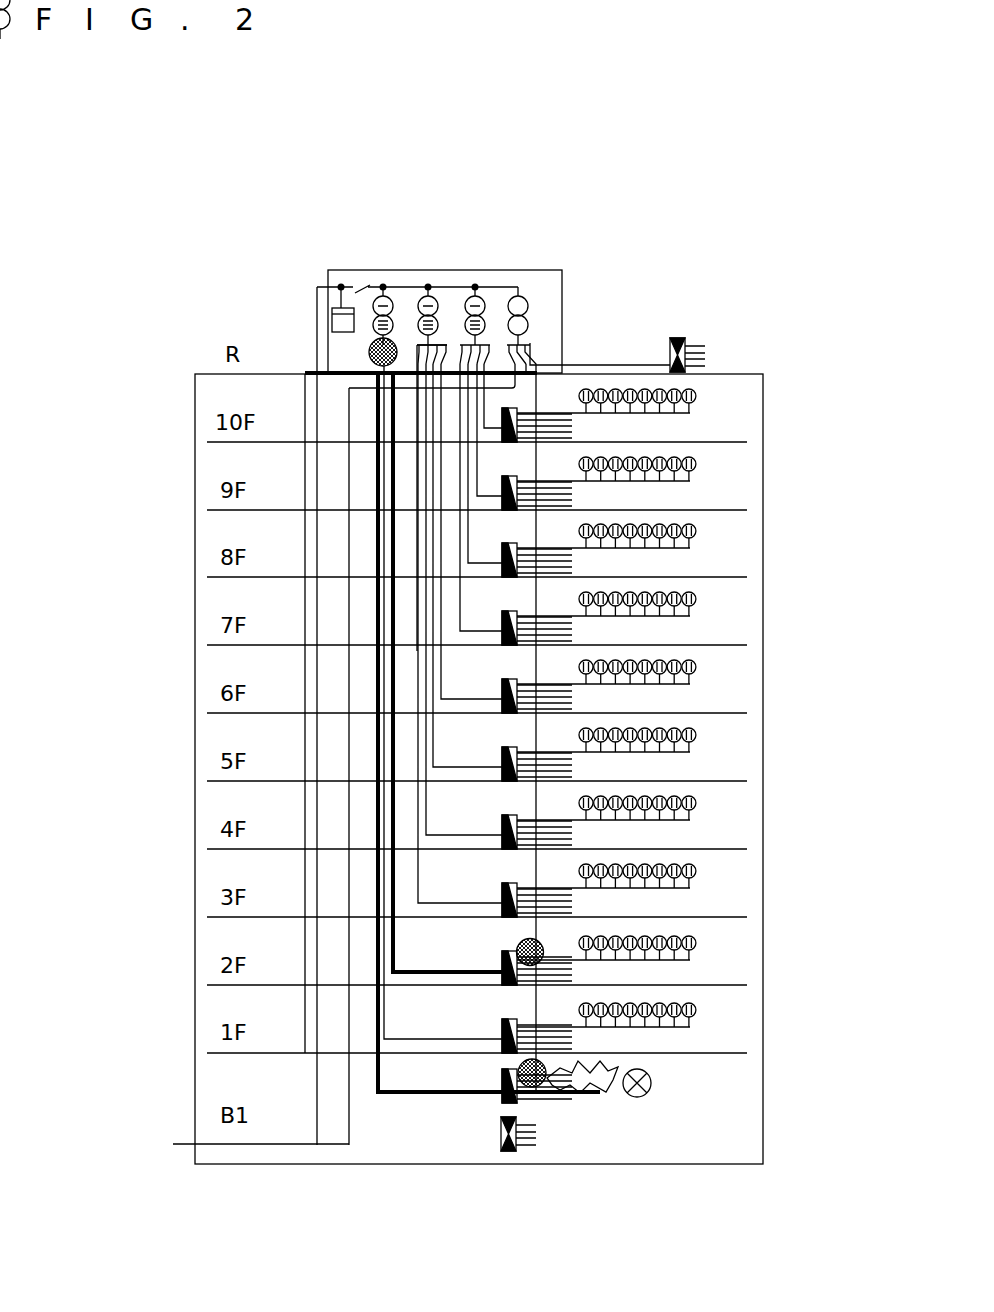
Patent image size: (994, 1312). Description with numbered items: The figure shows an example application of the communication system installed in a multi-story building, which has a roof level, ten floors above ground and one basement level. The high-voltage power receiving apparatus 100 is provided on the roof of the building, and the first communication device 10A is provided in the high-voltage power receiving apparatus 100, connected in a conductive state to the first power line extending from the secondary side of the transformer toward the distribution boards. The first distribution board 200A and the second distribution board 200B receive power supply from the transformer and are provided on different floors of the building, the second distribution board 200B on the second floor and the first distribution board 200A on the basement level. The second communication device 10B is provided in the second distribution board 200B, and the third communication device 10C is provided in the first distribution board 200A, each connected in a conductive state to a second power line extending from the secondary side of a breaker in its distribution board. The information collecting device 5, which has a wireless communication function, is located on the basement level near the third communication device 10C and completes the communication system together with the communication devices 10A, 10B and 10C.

The high-voltage power receiving apparatus 100 is at (440, 270).
The first communication device 10A is at (369, 354).
The second communication device 10B is at (544, 946).
The third communication device 10C is at (546, 1068).
The first distribution board 200A is at (502, 1100).
The second distribution board 200B is at (502, 980).
The information collecting device 5 is at (637, 1097).